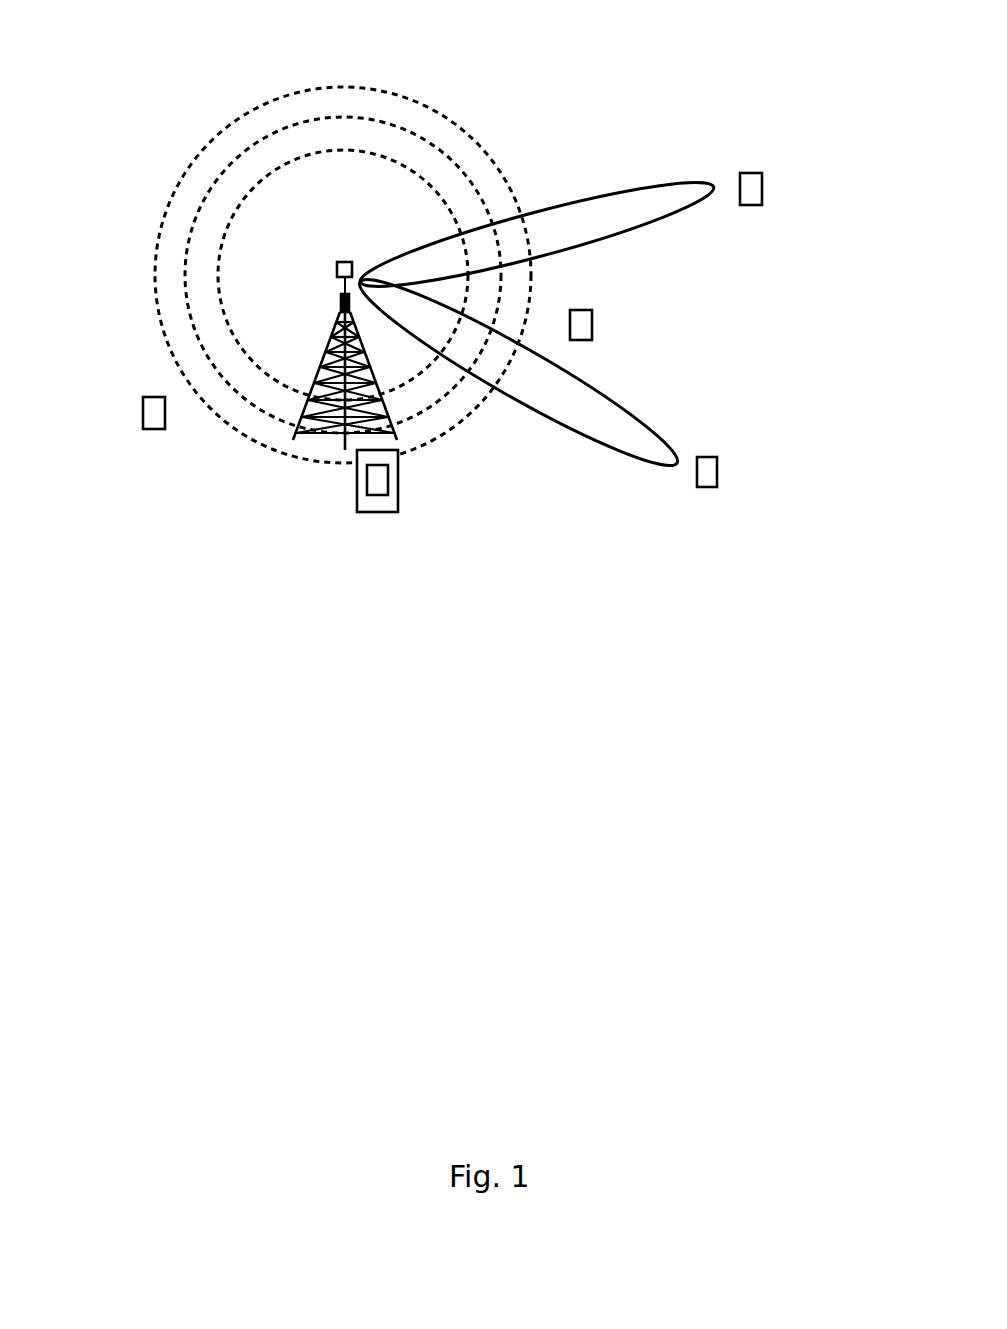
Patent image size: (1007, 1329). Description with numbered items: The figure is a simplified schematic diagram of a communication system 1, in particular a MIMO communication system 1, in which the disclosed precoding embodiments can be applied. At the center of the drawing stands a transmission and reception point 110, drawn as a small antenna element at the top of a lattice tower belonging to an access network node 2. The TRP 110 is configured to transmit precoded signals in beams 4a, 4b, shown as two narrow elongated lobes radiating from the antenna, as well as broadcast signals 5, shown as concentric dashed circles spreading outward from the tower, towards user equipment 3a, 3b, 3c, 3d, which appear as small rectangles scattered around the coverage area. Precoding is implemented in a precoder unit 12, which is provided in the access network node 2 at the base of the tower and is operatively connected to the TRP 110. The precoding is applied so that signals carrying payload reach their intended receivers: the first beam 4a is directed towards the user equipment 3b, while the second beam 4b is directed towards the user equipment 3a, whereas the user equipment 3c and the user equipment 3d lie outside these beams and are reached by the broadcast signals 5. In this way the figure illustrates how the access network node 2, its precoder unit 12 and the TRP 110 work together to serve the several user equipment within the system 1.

The communication system 1 is at (580, 112).
The access network node 2 is at (357, 485).
The precoder unit 12 is at (388, 477).
The transmission and reception point 110 is at (345, 262).
The broadcast signals 5 is at (154, 279).
The beam 4a is at (630, 232).
The beam 4b is at (607, 397).
The user equipment 3a is at (718, 470).
The user equipment 3b is at (763, 183).
The user equipment 3c is at (593, 318).
The user equipment 3d is at (143, 407).